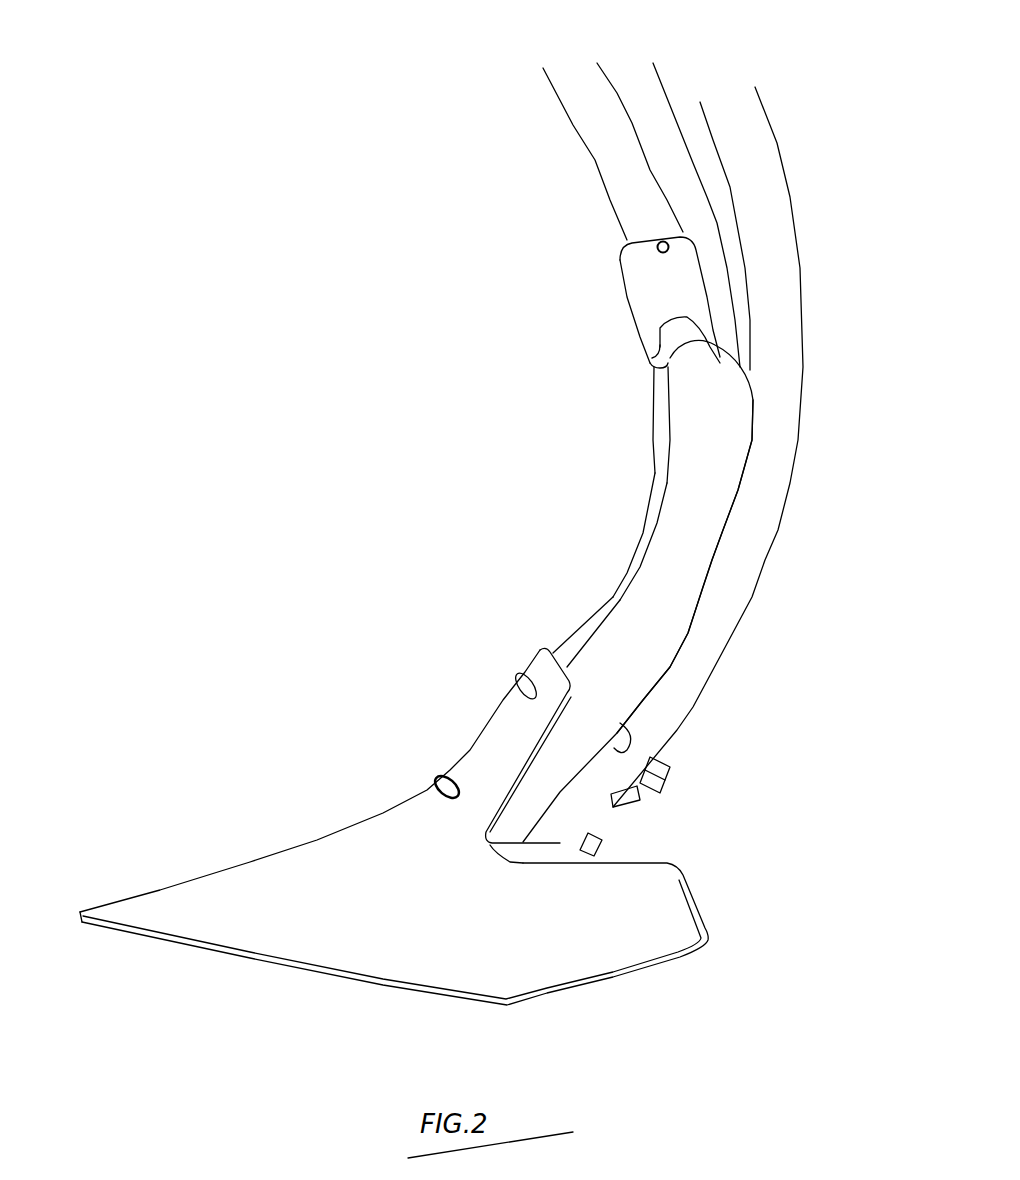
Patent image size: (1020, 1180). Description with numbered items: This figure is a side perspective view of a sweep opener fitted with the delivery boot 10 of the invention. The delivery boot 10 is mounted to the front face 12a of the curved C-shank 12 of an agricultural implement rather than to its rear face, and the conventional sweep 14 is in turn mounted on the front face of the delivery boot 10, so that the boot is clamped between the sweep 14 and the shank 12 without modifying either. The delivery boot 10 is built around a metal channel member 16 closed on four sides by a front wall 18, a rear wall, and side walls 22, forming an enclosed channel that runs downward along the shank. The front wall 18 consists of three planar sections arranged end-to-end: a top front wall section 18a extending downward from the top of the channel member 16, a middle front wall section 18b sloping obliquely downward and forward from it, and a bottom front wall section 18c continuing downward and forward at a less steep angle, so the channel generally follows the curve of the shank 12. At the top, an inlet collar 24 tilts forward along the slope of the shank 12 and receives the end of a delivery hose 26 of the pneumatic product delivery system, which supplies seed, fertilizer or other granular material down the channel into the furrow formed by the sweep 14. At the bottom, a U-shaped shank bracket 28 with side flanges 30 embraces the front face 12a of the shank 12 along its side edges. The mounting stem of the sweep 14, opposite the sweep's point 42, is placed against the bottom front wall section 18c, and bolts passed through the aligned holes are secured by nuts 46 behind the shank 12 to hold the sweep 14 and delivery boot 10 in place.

The delivery boot 10 is at (563, 475).
The shank 12 is at (785, 168).
The front face of the shank 12a is at (707, 160).
The sweep 14 is at (220, 865).
The channel member 16 is at (748, 456).
The front wall 18 is at (590, 515).
The top front wall section 18a is at (660, 428).
The middle front wall section 18b is at (645, 527).
The bottom front wall section 18c is at (613, 597).
The side walls 22 is at (683, 587).
The inlet collar 24 is at (660, 291).
The delivery hose 26 is at (628, 182).
The shank bracket 28 is at (583, 783).
The side flanges 30 is at (617, 747).
The point of the sweep 42 is at (80, 910).
The nut 46 is at (657, 770).